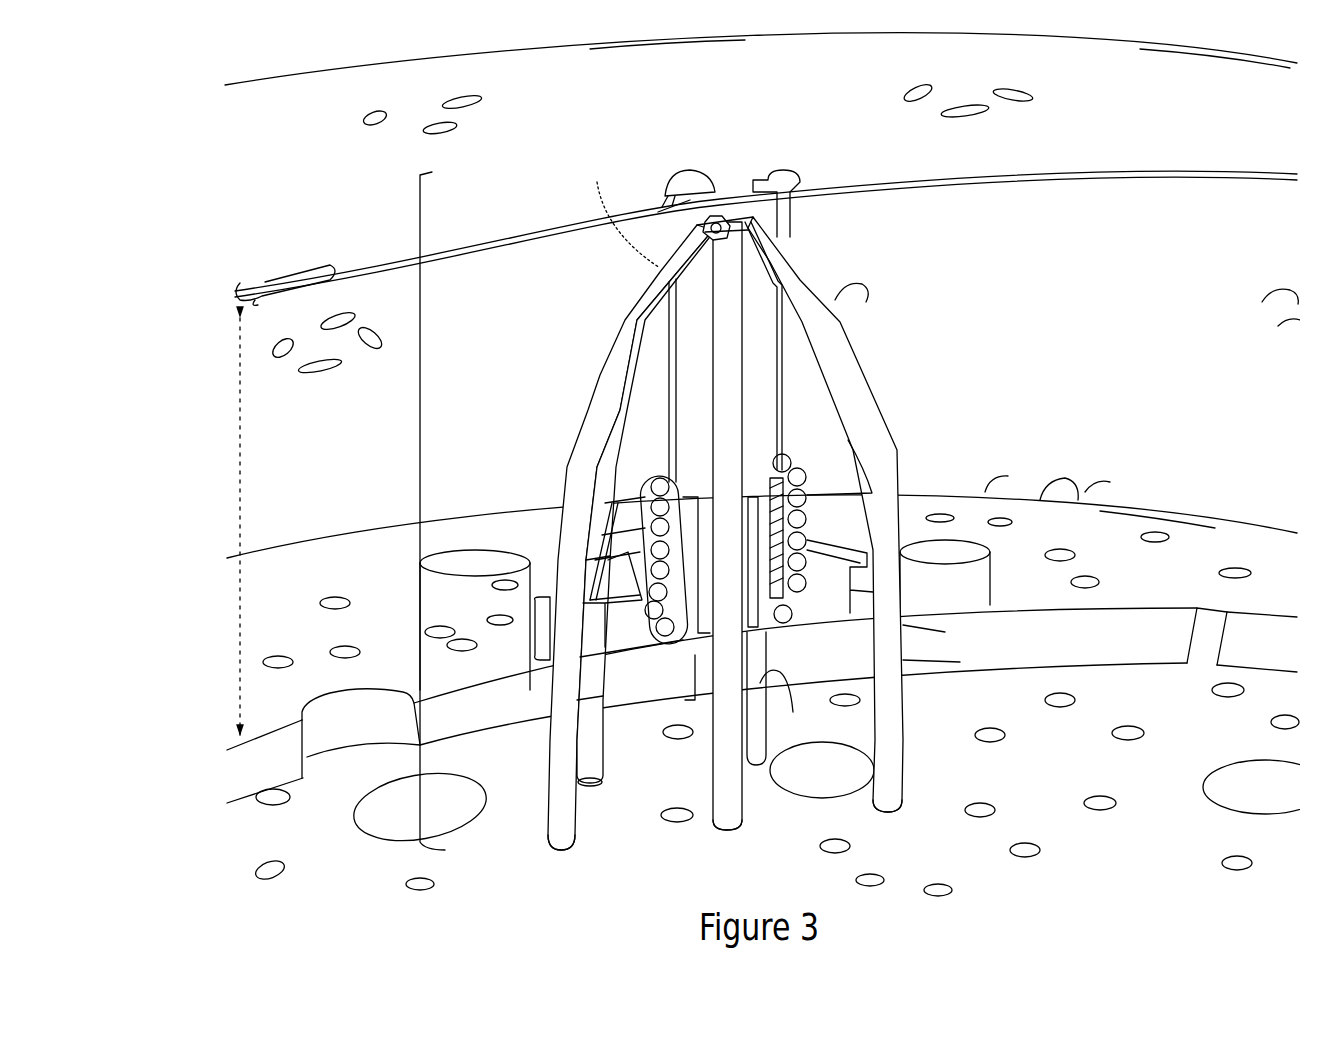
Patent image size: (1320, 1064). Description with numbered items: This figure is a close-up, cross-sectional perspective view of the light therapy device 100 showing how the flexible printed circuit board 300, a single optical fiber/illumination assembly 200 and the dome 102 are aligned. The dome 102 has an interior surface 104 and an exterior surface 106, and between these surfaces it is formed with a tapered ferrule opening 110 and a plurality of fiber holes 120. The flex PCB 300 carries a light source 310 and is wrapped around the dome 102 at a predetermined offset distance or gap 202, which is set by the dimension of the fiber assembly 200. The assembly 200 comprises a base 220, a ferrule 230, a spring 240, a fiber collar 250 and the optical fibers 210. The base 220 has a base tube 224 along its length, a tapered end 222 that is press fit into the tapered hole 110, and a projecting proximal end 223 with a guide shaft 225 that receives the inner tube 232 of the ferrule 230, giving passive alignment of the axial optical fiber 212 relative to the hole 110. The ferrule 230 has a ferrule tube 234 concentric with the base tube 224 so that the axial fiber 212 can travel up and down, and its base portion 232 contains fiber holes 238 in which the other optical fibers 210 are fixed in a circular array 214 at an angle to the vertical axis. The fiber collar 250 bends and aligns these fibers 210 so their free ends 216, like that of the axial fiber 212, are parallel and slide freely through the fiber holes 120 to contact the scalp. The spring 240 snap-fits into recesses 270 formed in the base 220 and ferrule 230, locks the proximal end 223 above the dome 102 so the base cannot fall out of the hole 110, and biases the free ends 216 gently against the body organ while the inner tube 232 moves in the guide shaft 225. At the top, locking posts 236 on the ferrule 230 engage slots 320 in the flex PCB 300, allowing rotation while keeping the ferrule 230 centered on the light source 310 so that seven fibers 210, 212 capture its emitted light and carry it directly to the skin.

The light therapy device 100 is at (207, 495).
The dome 102 is at (1250, 522).
The interior surface 104 is at (927, 673).
The exterior surface 106 is at (997, 630).
The ferrule opening (tapered hole) 110 is at (381, 686).
The fiber hole 120 is at (1205, 604).
The optical fiber/illumination assembly 200 is at (420, 512).
The offset distance/gap 202 is at (240, 673).
The optical fiber 210 is at (713, 343).
The axial optical fiber 212 is at (728, 421).
The circular fiber array 214 is at (612, 392).
The free end 216 is at (580, 848).
The base 220 is at (692, 672).
The tapered end 222 is at (668, 677).
The proximal end 223 is at (973, 648).
The base tube 224 is at (748, 652).
The guide shaft 225 is at (776, 601).
The ferrule 230 is at (785, 345).
The inner tube (base portion) of ferrule 232 is at (752, 506).
The ferrule tube 234 is at (740, 413).
The locking post 236 is at (786, 172).
The fiber hole 238 is at (775, 235).
The spring (biasing element) 240 is at (808, 474).
The fiber collar 250 is at (838, 545).
The recess 270 is at (682, 628).
The flexible printed circuit board 300 is at (563, 215).
The light source 310 is at (727, 207).
The slot 320 is at (1038, 97).